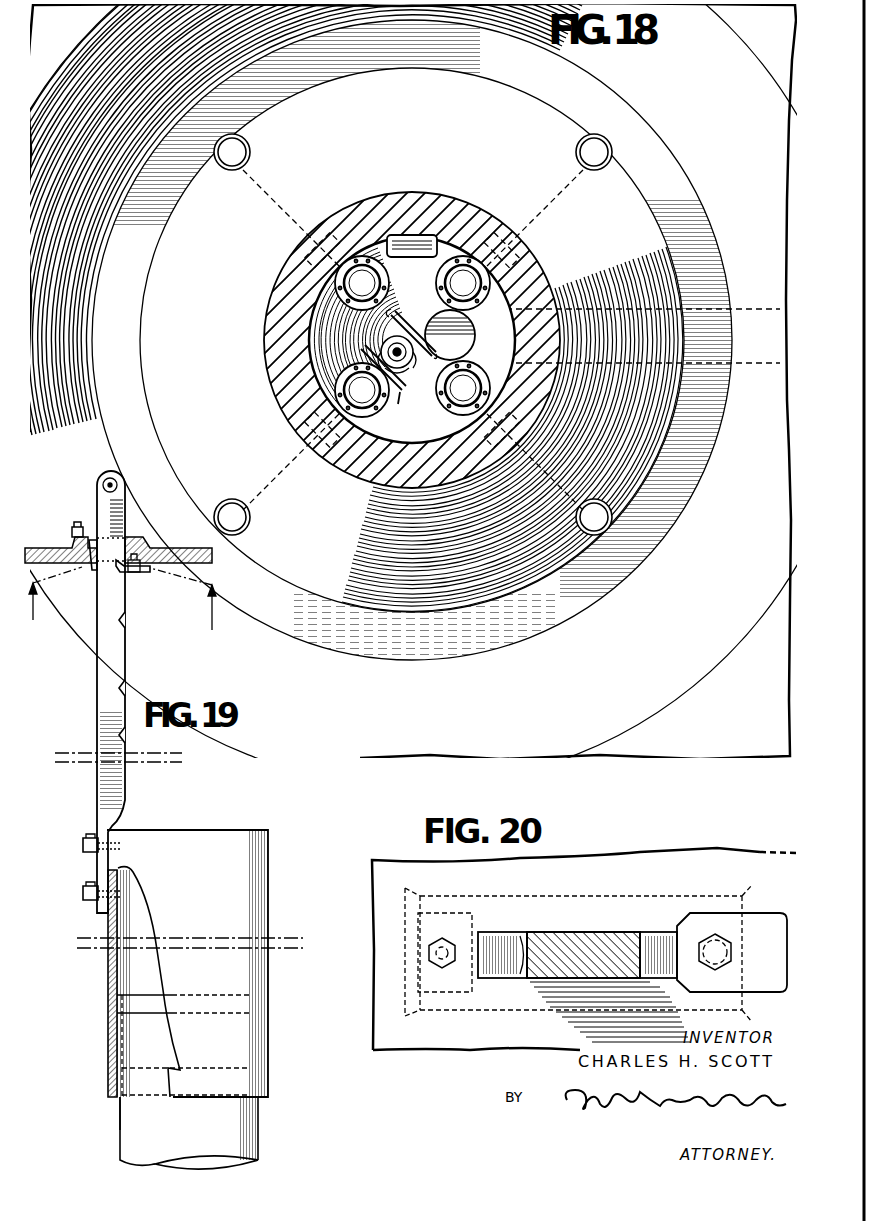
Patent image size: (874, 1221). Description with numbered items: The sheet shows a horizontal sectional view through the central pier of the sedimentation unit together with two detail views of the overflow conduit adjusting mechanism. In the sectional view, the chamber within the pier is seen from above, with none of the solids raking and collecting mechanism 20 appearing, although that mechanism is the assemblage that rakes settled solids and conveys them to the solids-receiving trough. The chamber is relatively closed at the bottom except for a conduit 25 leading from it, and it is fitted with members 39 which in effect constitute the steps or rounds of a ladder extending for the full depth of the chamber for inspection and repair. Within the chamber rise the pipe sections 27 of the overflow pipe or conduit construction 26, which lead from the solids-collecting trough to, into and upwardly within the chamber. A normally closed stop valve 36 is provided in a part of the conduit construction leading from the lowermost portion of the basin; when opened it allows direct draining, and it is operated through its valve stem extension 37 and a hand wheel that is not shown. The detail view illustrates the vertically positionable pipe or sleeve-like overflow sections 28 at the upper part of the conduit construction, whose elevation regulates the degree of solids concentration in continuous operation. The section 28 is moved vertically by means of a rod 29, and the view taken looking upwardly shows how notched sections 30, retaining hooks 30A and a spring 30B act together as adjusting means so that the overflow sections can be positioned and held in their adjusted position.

In FIG. 19, the solids-raking and collecting mechanism 20 is at (123, 610).
In FIG. 18, the conduit 25 is at (458, 341).
In FIG. 18, the overflow pipe or conduit construction 26 is at (462, 390).
In FIG. 19, the overflow pipe or conduit construction 26 is at (117, 1112).
In FIG. 19, the pipe or conduit sections 27 is at (189, 1133).
In FIG. 19, the vertically positionable pipe or sleeve-like elements 28 is at (175, 963).
In FIG. 19, the rod 29 is at (97, 706).
In FIG. 19, the notched sections 30 is at (124, 690).
In FIG. 20, the notched sections 30 is at (615, 935).
In FIG. 19, the retaining hooks 30A is at (140, 571).
In FIG. 20, the retaining hooks 30A is at (652, 945).
In FIG. 19, the spring 30B is at (95, 571).
In FIG. 20, the spring 30B is at (508, 948).
In FIG. 18, the stop valve 36 is at (387, 383).
In FIG. 18, the valve stem extension 37 is at (404, 318).
In FIG. 18, the members 39 is at (417, 247).